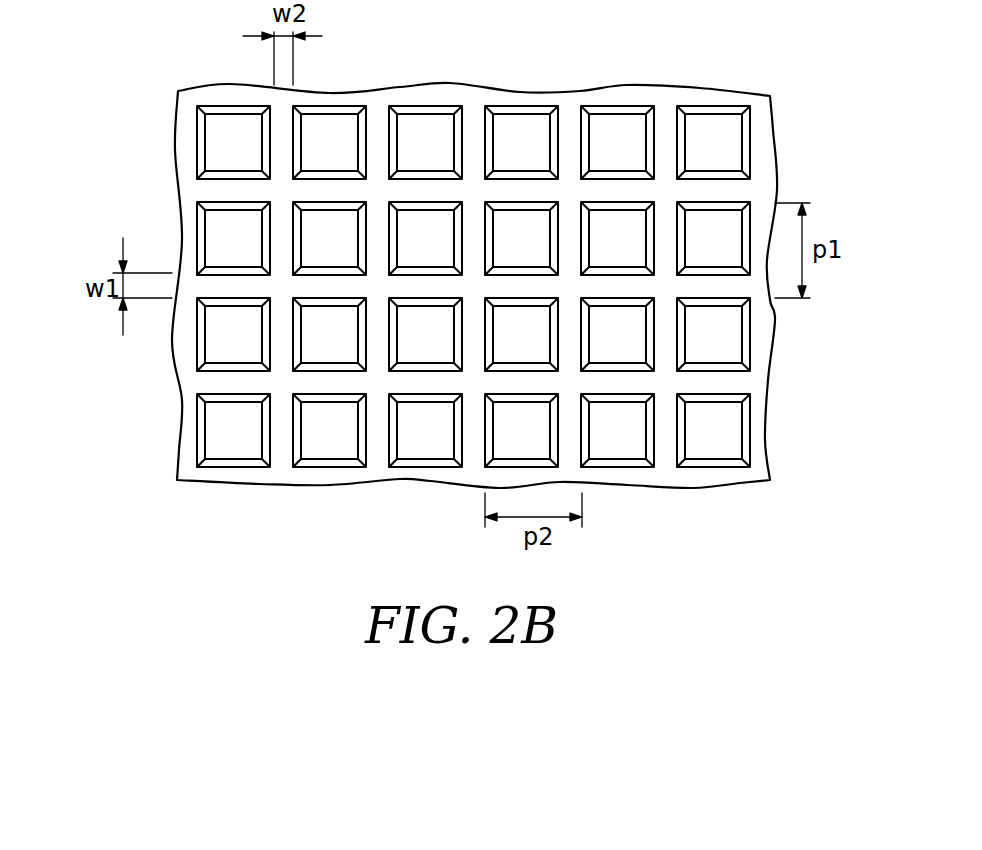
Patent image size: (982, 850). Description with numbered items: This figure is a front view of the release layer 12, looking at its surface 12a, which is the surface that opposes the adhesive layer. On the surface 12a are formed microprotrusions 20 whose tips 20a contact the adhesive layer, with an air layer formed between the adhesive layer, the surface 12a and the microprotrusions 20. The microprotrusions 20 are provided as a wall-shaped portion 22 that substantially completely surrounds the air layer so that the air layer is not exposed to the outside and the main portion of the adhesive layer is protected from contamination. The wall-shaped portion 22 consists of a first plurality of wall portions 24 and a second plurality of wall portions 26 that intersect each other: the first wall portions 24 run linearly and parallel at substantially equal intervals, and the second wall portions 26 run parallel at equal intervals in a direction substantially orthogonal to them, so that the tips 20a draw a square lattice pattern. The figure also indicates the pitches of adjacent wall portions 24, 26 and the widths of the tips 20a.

The release layer 12 is at (511, 259).
The surface 12a is at (608, 137).
The microprotrusions 20 is at (464, 298).
The tips 20a is at (377, 148).
The wall-shaped portion 22 is at (464, 289).
The first plurality of wall portions 24 is at (230, 188).
The second plurality of wall portions 26 is at (472, 148).